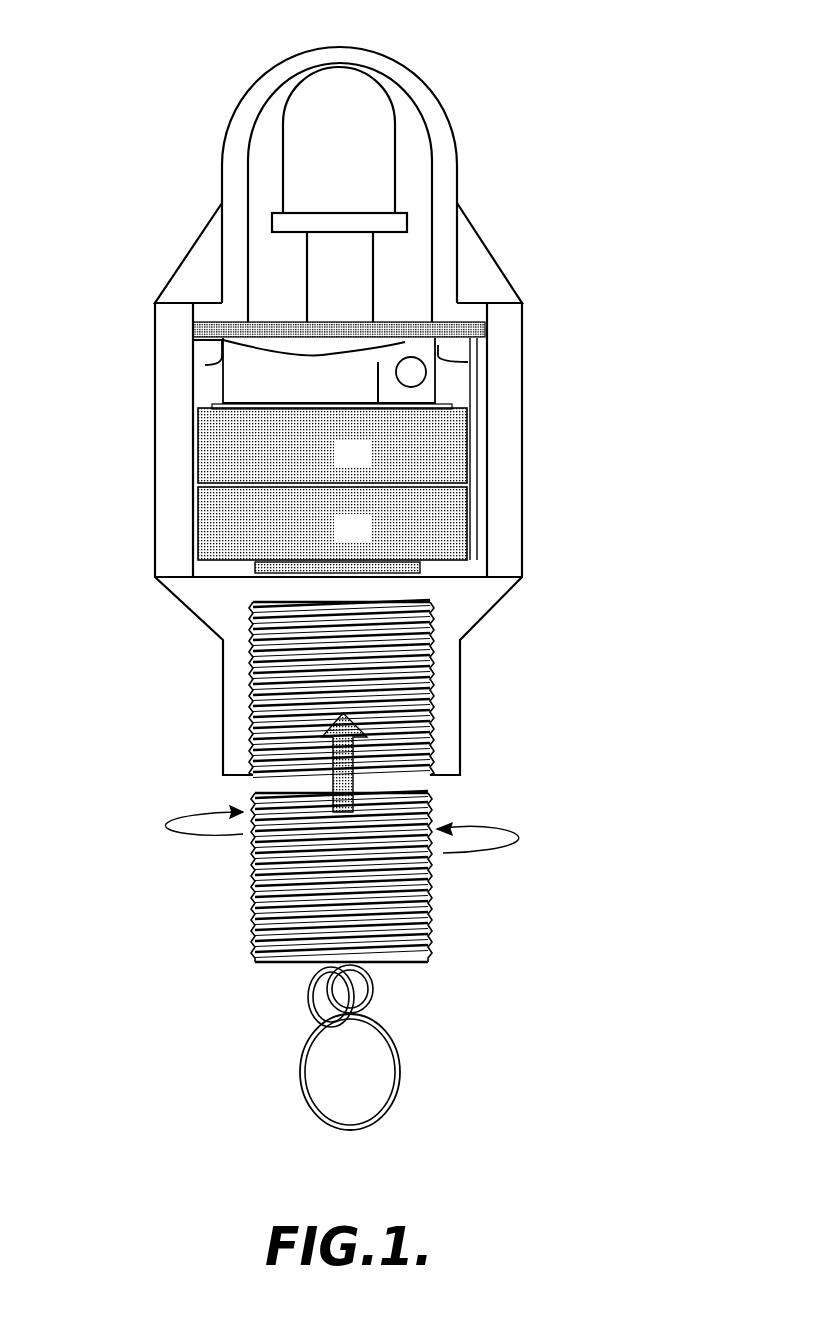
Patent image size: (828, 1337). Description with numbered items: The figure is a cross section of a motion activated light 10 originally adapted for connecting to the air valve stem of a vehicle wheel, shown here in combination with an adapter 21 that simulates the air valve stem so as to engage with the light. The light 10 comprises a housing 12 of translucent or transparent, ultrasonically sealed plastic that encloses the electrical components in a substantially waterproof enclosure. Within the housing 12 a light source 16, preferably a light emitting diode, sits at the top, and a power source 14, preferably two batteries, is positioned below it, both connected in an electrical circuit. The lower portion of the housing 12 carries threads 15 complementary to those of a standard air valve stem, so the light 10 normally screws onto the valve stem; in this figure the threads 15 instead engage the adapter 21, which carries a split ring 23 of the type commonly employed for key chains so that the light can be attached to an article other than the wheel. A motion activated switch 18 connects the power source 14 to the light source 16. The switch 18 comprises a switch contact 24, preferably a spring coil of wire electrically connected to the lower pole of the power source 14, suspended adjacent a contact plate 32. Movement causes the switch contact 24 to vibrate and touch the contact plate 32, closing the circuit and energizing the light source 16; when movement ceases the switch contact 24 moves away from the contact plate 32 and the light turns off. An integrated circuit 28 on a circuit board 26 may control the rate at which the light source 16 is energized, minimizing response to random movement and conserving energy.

The motion activated light 10 is at (530, 57).
The housing 12 is at (462, 143).
The power source 14 is at (366, 465).
The threads 15 is at (285, 678).
The light source 16 is at (339, 194).
The motion activated switch 18 is at (405, 350).
The adapter 21 is at (413, 922).
The split ring 23 is at (300, 1073).
The switch contact 24 is at (411, 372).
The circuit board 26 is at (278, 322).
The integrated circuit 28 is at (250, 346).
The contact plate 32 is at (250, 402).